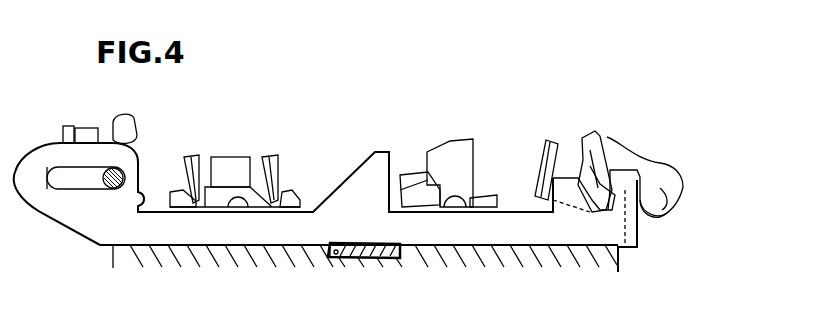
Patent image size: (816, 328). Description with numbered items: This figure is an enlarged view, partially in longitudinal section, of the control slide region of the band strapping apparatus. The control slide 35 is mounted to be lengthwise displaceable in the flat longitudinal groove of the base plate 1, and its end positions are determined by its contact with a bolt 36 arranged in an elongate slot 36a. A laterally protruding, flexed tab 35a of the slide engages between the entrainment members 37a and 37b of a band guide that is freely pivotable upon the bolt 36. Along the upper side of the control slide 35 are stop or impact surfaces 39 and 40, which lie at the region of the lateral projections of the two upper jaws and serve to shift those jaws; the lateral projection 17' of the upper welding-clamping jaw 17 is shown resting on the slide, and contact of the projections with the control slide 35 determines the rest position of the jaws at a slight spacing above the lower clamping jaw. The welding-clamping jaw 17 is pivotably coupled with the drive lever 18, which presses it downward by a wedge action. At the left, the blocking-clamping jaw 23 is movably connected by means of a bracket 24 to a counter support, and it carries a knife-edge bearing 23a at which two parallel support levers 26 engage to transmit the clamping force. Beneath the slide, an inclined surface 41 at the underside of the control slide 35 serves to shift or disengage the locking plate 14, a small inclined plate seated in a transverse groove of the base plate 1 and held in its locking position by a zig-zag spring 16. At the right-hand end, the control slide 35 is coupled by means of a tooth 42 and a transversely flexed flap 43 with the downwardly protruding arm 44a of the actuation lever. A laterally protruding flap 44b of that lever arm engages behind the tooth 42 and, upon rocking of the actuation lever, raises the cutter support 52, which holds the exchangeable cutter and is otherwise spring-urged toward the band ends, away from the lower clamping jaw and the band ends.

The base plate 1 is at (572, 253).
The locking plate 14 is at (372, 258).
The zig-zag spring 16 is at (350, 260).
The upper welding-clamping jaw 17 is at (490, 184).
The lateral projection 17' is at (423, 162).
The drive lever 18 is at (467, 150).
The blocking-clamping jaw 23 is at (181, 188).
The knife-edge bearing 23a is at (292, 199).
The bracket 24 is at (236, 165).
The support levers 26 is at (190, 165).
The control slide 35 is at (267, 232).
The flexed tab 35a is at (88, 128).
The bolt 36 is at (113, 190).
The elongate slot 36a is at (73, 180).
The entrainment member 37a is at (63, 132).
The entrainment member 37b is at (130, 121).
The stop surface 39 is at (143, 210).
The stop surface 40 is at (398, 158).
The inclined surface 41 is at (332, 255).
The tooth 42 is at (568, 187).
The transversely flexed flap 43 is at (632, 178).
The downwardly protruding arm 44a is at (665, 218).
The lateral protruding flap 44b is at (543, 163).
The cutter support 52 is at (588, 155).